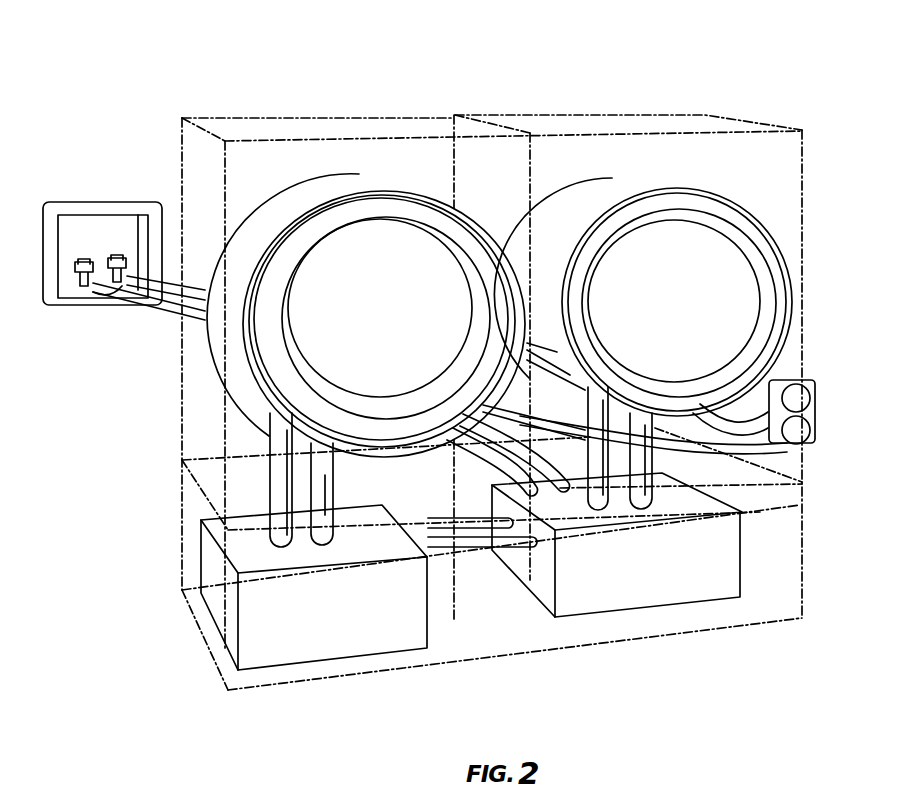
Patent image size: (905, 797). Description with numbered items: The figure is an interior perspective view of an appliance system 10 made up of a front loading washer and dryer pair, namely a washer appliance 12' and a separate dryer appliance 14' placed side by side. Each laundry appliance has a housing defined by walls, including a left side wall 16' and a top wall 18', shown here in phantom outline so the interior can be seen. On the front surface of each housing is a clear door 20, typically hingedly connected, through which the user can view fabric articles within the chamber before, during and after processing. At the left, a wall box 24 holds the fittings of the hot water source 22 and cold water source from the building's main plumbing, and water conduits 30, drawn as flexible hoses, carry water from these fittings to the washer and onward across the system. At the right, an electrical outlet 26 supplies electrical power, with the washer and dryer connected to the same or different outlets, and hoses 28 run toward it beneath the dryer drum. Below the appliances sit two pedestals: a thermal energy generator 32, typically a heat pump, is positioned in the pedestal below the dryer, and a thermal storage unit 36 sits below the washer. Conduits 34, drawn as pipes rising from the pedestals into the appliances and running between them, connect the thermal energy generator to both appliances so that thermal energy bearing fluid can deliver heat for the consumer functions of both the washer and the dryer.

The appliance system 10 is at (693, 72).
The washer appliance 12' is at (653, 367).
The dryer appliance 14' is at (441, 404).
The left side wall 16' is at (171, 395).
The top wall 18' is at (492, 97).
The clear door 20 is at (370, 312).
The hot water source 22 is at (118, 258).
The valve box 24 is at (57, 274).
The electrical outlet 26 is at (818, 412).
The drain hose 28 is at (750, 417).
The water conduit 30 is at (170, 280).
The thermal energy generator 32 is at (333, 633).
The conduits 34 is at (283, 503).
The thermal storage unit 36 is at (718, 587).